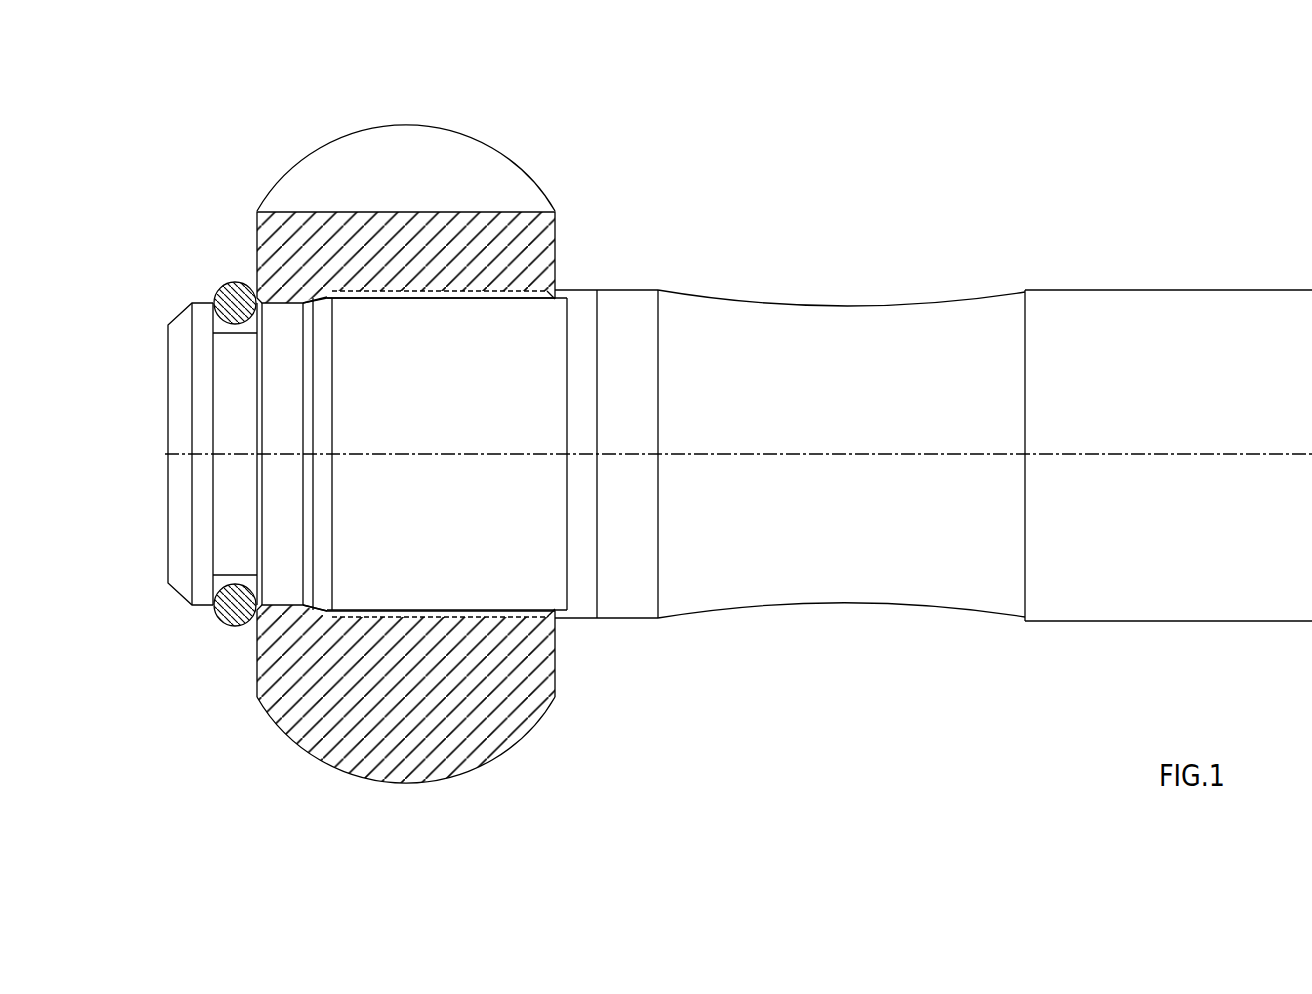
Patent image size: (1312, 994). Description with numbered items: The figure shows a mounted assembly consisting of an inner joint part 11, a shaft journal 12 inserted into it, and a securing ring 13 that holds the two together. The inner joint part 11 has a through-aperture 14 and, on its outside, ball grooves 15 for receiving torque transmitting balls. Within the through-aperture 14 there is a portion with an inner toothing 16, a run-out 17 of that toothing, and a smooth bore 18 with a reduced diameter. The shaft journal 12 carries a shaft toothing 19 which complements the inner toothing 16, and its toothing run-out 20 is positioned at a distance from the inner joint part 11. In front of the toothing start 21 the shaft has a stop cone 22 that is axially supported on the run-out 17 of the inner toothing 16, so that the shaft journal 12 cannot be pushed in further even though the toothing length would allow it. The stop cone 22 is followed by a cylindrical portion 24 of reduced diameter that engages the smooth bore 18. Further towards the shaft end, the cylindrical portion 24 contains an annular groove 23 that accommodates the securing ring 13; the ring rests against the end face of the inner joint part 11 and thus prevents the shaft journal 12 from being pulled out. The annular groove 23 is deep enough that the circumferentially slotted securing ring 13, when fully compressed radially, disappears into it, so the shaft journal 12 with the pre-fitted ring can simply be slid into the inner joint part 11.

The inner joint part 11 is at (555, 238).
The shaft journal 12 is at (630, 290).
The securing ring 13 is at (230, 287).
The through-aperture 14 is at (475, 488).
The ball grooves 15 is at (482, 162).
The inner toothing 16 is at (452, 300).
The run-out of the inner toothing 17 is at (332, 300).
The smooth bore 18 is at (285, 303).
The shaft toothing 19 is at (573, 293).
The toothing run-out 20 is at (581, 617).
The toothing start 21 is at (317, 607).
The stop cone 22 is at (255, 660).
The annular groove 23 is at (193, 597).
The cylindrical portion 24 is at (256, 620).